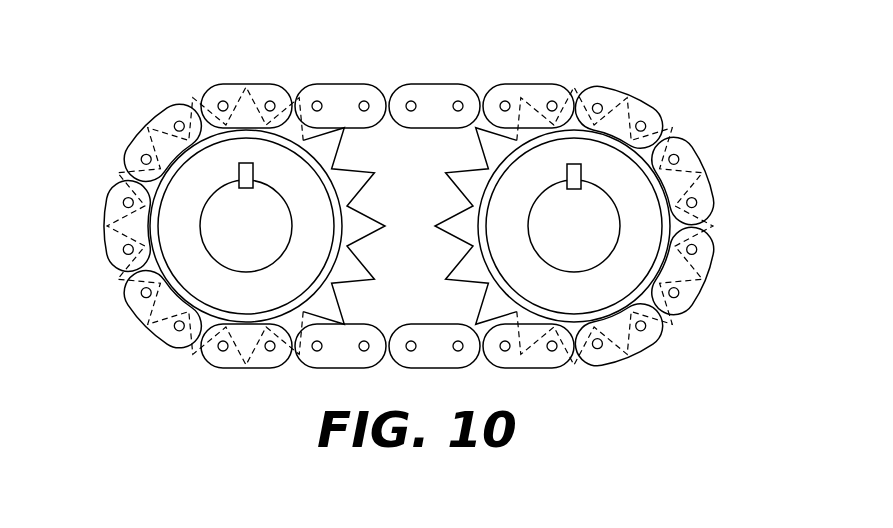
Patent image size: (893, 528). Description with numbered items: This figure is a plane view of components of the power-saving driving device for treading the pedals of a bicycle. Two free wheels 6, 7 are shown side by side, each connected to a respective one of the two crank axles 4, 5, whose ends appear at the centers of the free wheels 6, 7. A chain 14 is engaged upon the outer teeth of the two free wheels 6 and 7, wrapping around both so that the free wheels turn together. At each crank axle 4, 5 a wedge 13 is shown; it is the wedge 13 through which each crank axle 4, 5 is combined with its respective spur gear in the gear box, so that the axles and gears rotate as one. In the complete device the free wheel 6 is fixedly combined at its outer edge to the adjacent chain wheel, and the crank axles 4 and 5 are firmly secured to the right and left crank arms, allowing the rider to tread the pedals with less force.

The crank axle 4 is at (238, 226).
The crank axle 5 is at (616, 220).
The free wheel 6 is at (220, 158).
The free wheel 7 is at (647, 108).
The wedge 13 is at (243, 175).
The chain 14 is at (435, 88).